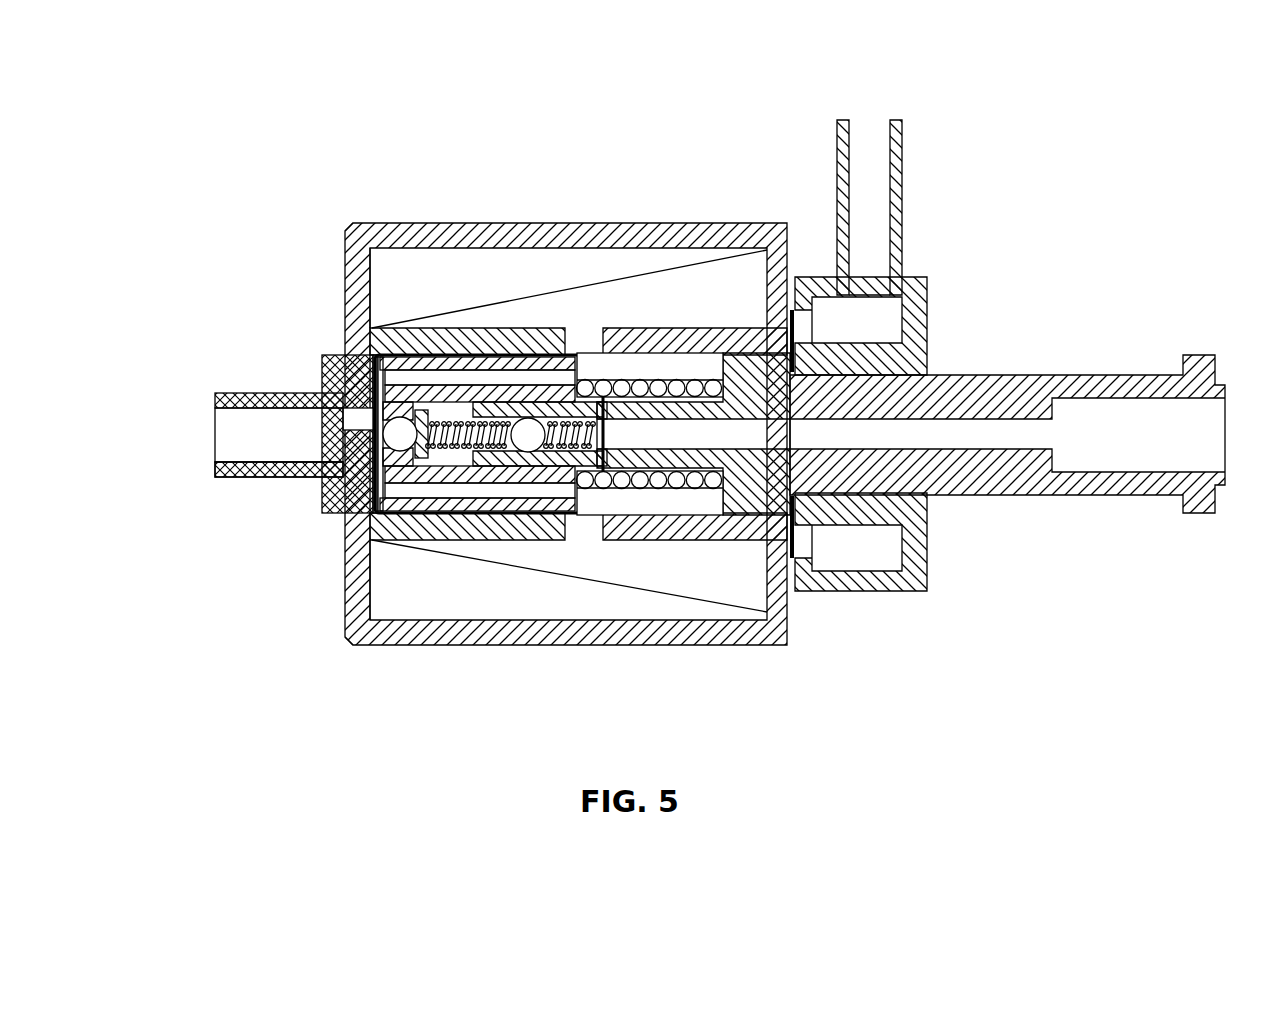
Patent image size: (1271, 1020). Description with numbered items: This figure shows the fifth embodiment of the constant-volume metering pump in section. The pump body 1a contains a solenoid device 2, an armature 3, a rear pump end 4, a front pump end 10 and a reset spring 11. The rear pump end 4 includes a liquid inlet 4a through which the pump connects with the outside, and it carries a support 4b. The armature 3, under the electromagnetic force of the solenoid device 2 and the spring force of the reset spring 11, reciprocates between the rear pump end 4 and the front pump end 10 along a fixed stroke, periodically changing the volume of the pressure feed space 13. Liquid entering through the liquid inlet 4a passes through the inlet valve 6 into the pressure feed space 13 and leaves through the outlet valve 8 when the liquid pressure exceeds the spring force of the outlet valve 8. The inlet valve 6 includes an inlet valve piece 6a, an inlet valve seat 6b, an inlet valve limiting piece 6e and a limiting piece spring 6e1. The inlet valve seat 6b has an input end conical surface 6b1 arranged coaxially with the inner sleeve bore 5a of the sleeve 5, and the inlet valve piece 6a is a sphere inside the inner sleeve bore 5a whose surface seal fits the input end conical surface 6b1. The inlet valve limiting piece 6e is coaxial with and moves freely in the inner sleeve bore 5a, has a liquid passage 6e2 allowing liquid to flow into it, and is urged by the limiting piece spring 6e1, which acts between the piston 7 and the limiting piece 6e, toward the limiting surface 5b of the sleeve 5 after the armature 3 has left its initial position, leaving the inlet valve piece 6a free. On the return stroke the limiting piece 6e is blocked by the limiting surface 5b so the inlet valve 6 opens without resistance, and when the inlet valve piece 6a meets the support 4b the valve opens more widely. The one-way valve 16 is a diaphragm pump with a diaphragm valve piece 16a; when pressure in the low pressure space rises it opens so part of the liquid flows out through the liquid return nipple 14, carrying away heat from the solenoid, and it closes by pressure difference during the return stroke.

The pump body 1a is at (955, 560).
The solenoid device 2 is at (425, 220).
The armature 3 is at (420, 540).
The rear pump end 4 is at (372, 437).
The liquid inlet 4a is at (278, 445).
The support 4b is at (333, 473).
The sleeve 5 is at (475, 478).
The inner sleeve bore 5a is at (448, 506).
The limiting surface 5b is at (442, 463).
The inlet valve 6 is at (405, 460).
The inlet valve piece 6a is at (350, 412).
The inlet valve seat 6b is at (388, 402).
The input end conical surface 6b1 is at (378, 430).
The inlet valve limiting piece 6e is at (430, 410).
The limiting piece spring 6e1 is at (493, 405).
The liquid passage 6e2 is at (372, 328).
The piston 7 is at (638, 457).
The outlet valve 8 is at (572, 466).
The front pump end 10 is at (636, 357).
The reset spring 11 is at (693, 480).
The pressure feed space 13 is at (505, 470).
The liquid return nipple 14 is at (877, 198).
The one-way valve 16 is at (828, 330).
The diaphragm valve piece 16a is at (792, 337).